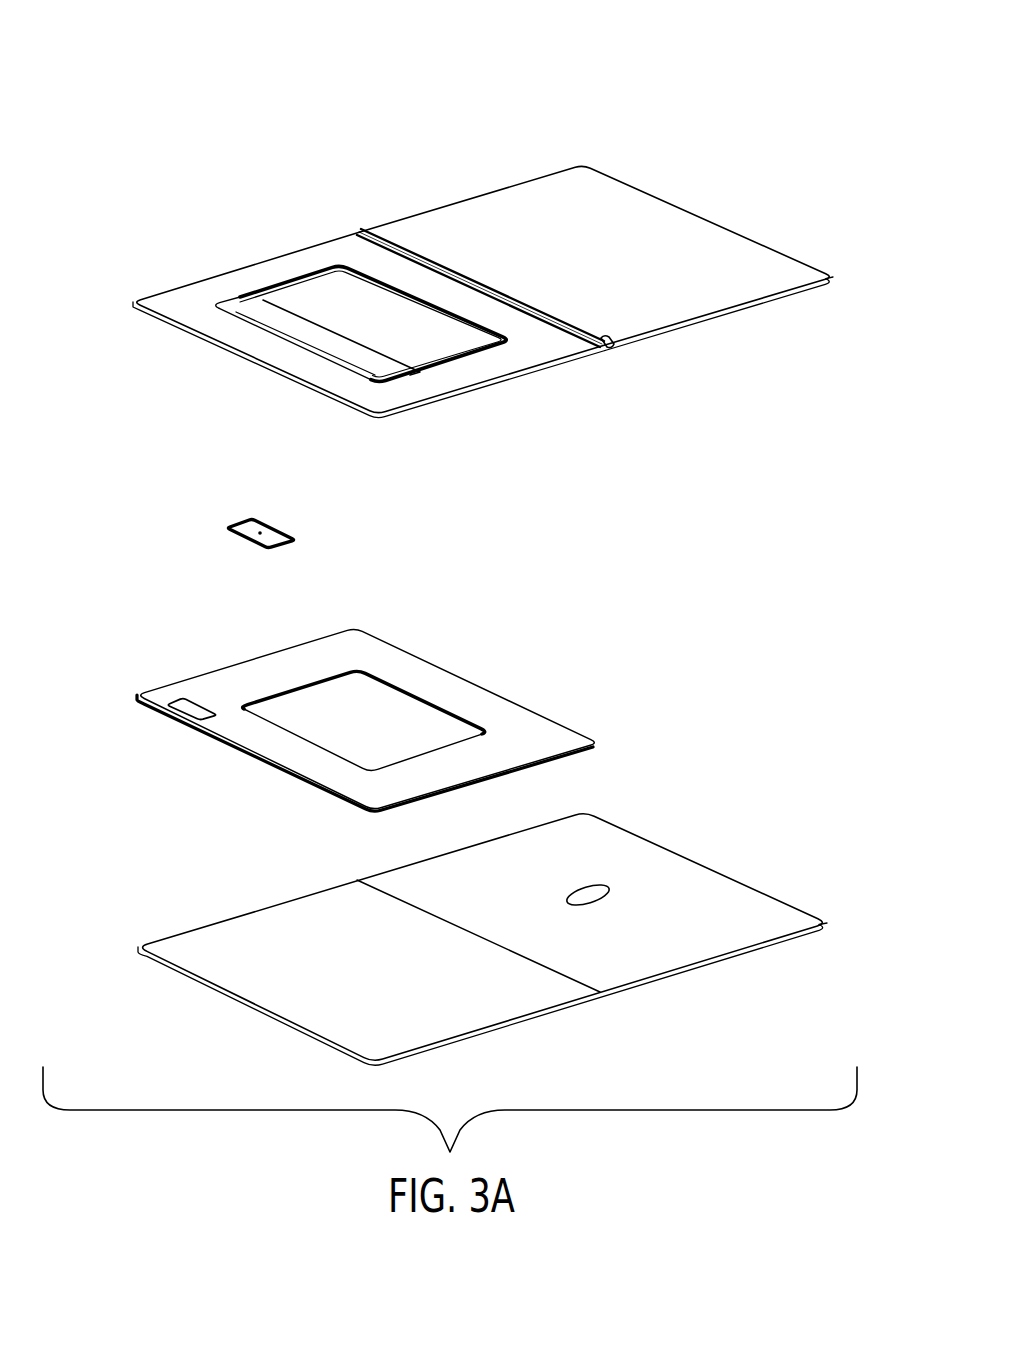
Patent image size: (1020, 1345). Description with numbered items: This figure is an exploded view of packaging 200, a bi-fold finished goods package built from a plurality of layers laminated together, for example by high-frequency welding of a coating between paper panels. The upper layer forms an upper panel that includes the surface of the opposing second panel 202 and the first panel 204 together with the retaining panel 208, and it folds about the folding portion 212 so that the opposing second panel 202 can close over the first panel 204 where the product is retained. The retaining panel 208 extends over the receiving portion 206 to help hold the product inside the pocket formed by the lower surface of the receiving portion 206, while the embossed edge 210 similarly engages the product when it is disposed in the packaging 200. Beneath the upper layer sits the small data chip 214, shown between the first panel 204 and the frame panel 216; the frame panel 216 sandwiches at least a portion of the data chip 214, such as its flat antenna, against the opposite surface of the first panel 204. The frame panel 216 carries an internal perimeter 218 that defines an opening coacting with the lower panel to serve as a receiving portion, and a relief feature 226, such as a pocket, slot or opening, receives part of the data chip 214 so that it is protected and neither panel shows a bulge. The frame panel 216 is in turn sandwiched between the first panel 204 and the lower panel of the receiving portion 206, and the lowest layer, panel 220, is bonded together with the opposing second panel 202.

The packaging 200 is at (553, 88).
The opposing second panel 202 is at (768, 260).
The first panel 204 is at (205, 287).
The receiving portion 206 is at (207, 945).
The retaining panel 208 is at (328, 348).
The embossed edge 210 is at (283, 280).
The folding portion 212 is at (615, 346).
The data chip 214 is at (232, 527).
The frame panel 216 is at (160, 692).
The internal perimeter 218 is at (430, 700).
The panel 220 is at (600, 893).
The relief feature 226 is at (182, 702).